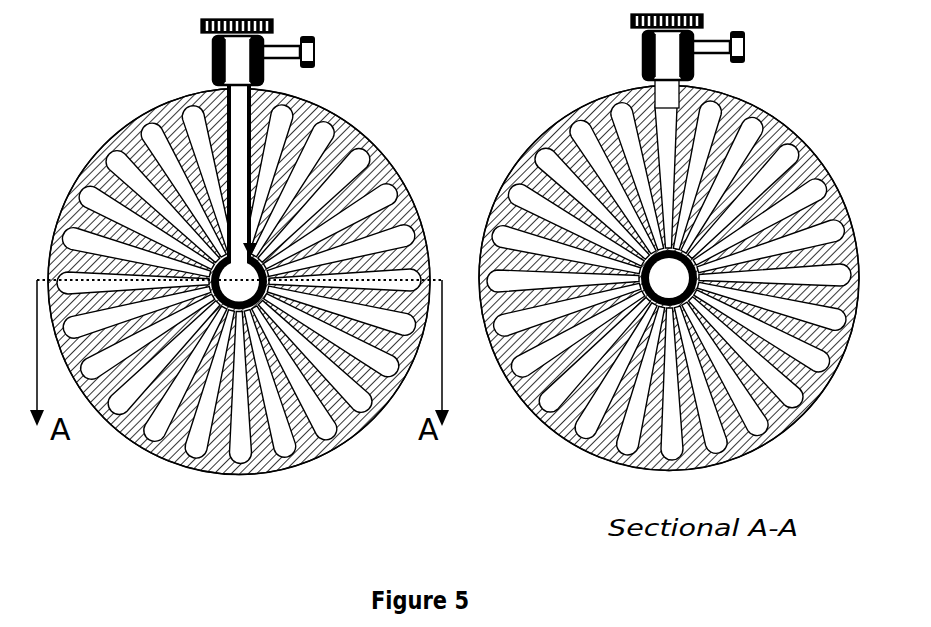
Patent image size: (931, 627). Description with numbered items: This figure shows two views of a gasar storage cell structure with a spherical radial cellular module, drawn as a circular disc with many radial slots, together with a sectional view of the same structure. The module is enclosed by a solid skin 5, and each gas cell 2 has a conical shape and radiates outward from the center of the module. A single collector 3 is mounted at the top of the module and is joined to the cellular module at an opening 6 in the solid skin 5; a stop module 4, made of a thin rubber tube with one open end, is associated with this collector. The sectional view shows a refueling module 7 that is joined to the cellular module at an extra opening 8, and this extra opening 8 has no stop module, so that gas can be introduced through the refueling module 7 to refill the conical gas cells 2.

The gas cell 2 is at (669, 270).
The collector 3 is at (222, 54).
The stop module 4 is at (278, 252).
The solid skin 5 is at (733, 102).
The opening 6 is at (232, 194).
The refueling module 7 is at (650, 39).
The extra opening 8 is at (650, 91).